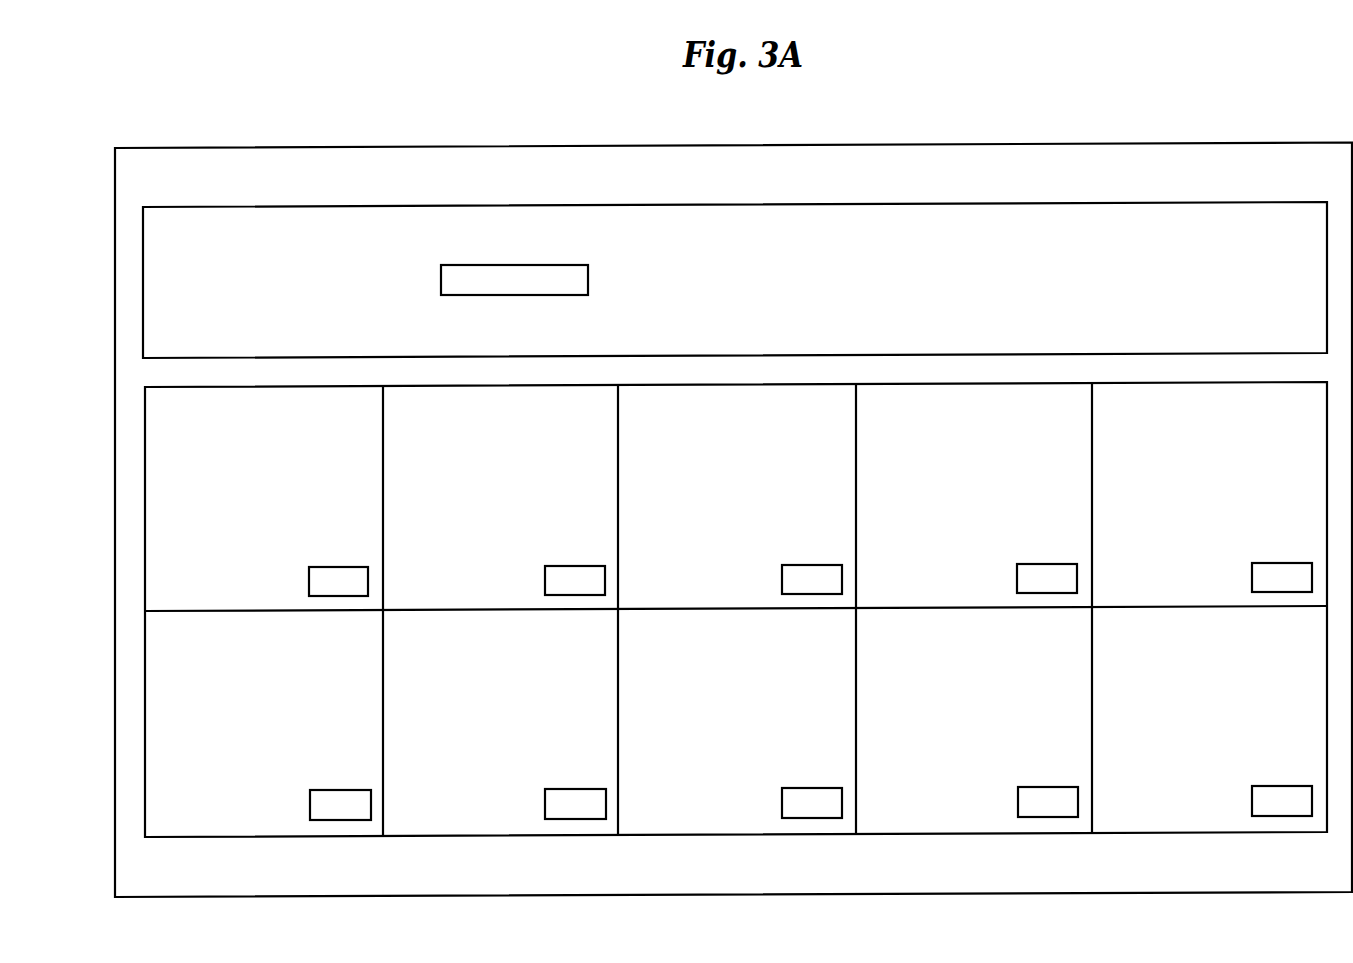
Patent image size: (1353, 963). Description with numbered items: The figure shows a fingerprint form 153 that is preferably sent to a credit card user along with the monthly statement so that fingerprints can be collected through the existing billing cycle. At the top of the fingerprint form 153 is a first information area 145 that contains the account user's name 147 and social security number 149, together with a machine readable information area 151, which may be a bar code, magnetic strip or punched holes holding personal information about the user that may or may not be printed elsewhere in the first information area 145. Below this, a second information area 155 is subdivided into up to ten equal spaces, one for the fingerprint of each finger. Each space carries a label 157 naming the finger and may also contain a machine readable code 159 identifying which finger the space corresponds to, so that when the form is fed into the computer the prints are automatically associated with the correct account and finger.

The fingerprint form 153 is at (384, 146).
The first information area 145 is at (236, 207).
The account user's name 147 is at (308, 267).
The social security number 149 is at (310, 298).
The machine readable information area 151 is at (588, 280).
The second information area 155 is at (476, 837).
The label 157 is at (250, 568).
The machine readable code 159 is at (321, 567).